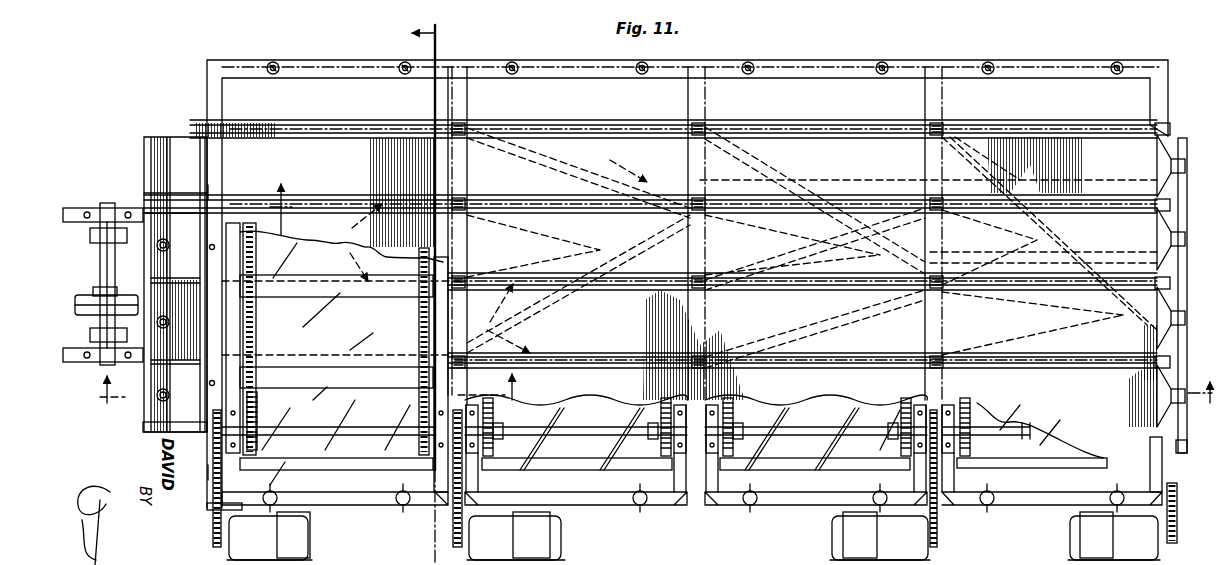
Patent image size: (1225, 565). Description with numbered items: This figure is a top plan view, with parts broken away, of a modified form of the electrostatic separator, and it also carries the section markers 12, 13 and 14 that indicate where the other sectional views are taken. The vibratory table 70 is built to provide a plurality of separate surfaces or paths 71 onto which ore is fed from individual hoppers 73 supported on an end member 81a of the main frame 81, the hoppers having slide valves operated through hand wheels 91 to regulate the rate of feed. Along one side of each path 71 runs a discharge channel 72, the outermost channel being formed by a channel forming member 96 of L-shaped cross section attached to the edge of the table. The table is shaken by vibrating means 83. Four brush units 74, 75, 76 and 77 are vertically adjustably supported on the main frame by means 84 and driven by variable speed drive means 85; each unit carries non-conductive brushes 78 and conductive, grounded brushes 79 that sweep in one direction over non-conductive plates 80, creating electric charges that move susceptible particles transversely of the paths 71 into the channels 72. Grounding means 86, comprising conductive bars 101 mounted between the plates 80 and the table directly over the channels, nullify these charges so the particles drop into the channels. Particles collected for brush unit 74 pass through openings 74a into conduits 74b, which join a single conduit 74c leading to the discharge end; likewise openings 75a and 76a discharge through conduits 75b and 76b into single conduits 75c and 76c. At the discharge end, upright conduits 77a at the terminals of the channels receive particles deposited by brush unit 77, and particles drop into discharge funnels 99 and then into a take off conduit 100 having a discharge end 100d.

The vibratory table 70 is at (150, 427).
The separate surfaces or paths 71 is at (763, 282).
The discharge channel 72 is at (488, 196).
The individual hoppers 73 is at (180, 384).
The brush unit 74 is at (353, 486).
The discharge openings 74a is at (462, 128).
The conduits 74b is at (586, 166).
The single conduit 74c is at (830, 180).
The brush unit 75 is at (600, 486).
The openings 75a is at (702, 127).
The conduits 75b is at (760, 156).
The single conduit 75c is at (1103, 257).
The brush unit 76 is at (792, 484).
The openings 76a is at (944, 128).
The conduits 76b is at (960, 216).
The single conduit 76c is at (1147, 324).
The brush unit 77 is at (1018, 486).
The upright conduits 77a is at (1169, 132).
The brushes 78 is at (320, 367).
The brushes 79 is at (340, 290).
The non-conductive plates 80 is at (671, 358).
The main frame 81 is at (207, 89).
The end member 81a is at (222, 190).
The vibrating means 83 is at (82, 293).
The means for vertically adjustably supporting the brush units 84 is at (277, 62).
The variable speed drive means 85 is at (222, 541).
The grounding means 86 is at (494, 256).
The hand wheels 91 is at (157, 247).
The channel forming member 96 is at (305, 121).
The discharge funnels 99 is at (1183, 160).
The take off conduit 100 is at (1186, 272).
The discharge end 100d is at (1180, 453).
The bars 101 is at (343, 216).
The section line 12 is at (745, 299).
The section line 13 is at (313, 392).
The section line 14 is at (420, 288).